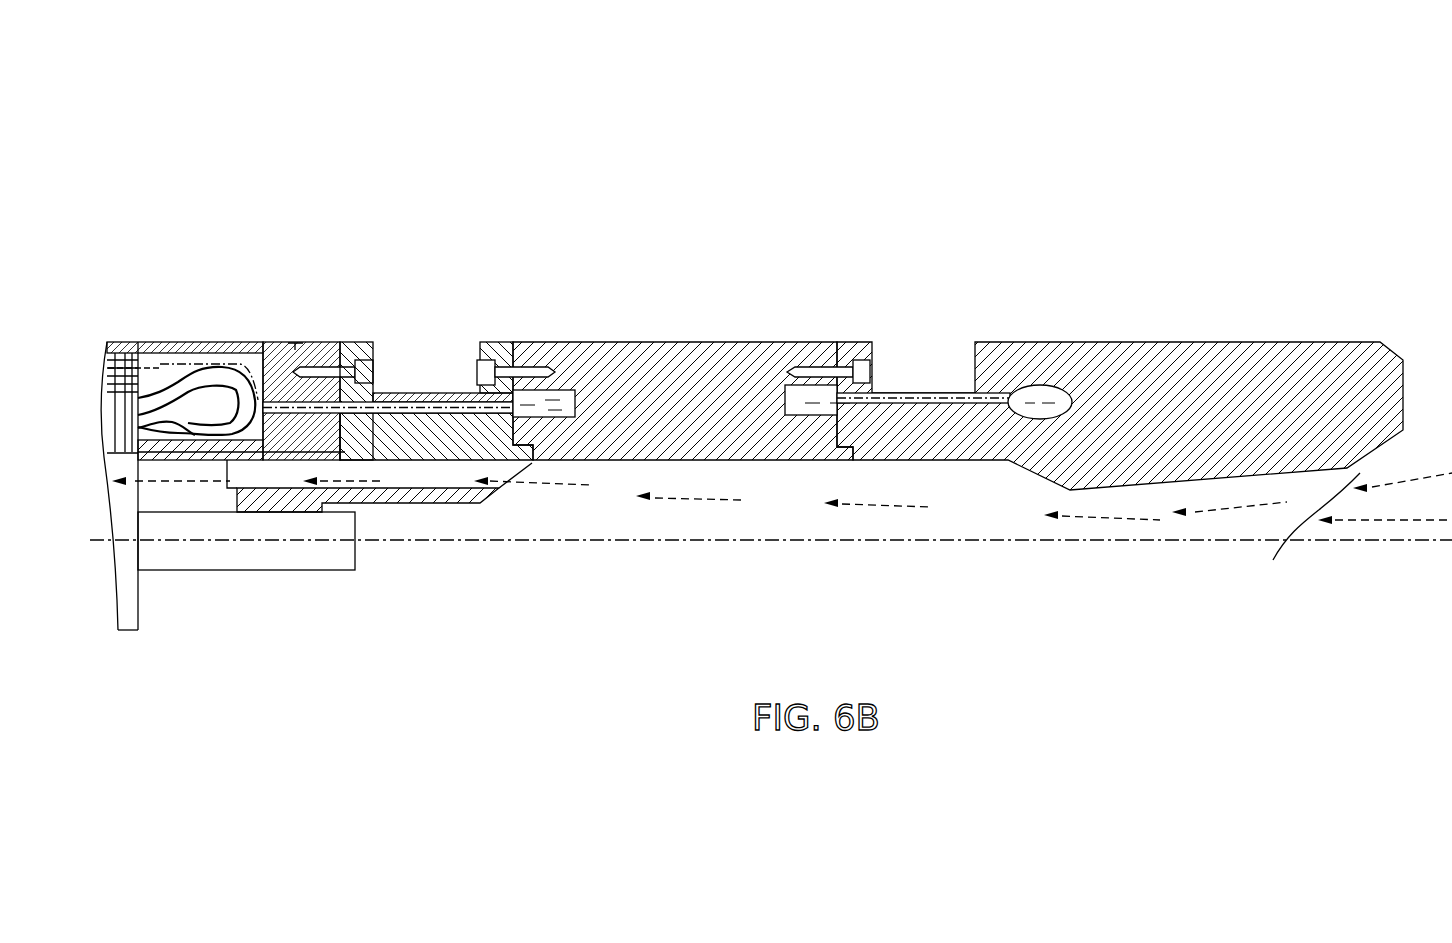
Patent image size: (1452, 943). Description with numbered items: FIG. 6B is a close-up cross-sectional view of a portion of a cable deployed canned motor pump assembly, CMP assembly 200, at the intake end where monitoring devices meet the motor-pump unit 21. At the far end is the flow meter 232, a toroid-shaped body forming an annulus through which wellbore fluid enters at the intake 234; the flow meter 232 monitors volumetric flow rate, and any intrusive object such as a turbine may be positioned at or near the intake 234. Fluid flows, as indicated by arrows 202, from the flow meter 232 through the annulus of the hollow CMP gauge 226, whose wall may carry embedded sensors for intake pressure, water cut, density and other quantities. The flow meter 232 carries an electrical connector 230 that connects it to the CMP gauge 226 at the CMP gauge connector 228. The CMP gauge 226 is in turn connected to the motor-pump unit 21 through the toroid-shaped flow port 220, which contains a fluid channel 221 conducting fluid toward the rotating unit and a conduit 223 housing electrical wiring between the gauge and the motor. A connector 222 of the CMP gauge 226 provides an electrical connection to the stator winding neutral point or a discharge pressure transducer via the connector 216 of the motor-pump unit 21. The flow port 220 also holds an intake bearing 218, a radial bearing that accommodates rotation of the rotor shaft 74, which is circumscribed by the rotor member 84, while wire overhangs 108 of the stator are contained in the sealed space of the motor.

The CMP assembly 200 is at (325, 118).
The wire overhangs 108 is at (165, 397).
The rotor shaft 74 is at (174, 508).
The connector 216 is at (254, 390).
The intake bearing 218 is at (284, 480).
The flow port 220 is at (377, 428).
The fluid channel 221 is at (420, 460).
The conduit 223 is at (457, 398).
The connector 222 is at (532, 390).
The CMP gauge 226 is at (675, 352).
The CMP gauge connector 228 is at (820, 385).
The electrical connector 230 is at (1039, 385).
The flow meter 232 is at (1257, 388).
The intake 234 is at (1309, 535).
The arrows 202 is at (680, 497).
The rotor member 84 is at (127, 585).
The motor-pump unit 21 is at (125, 635).